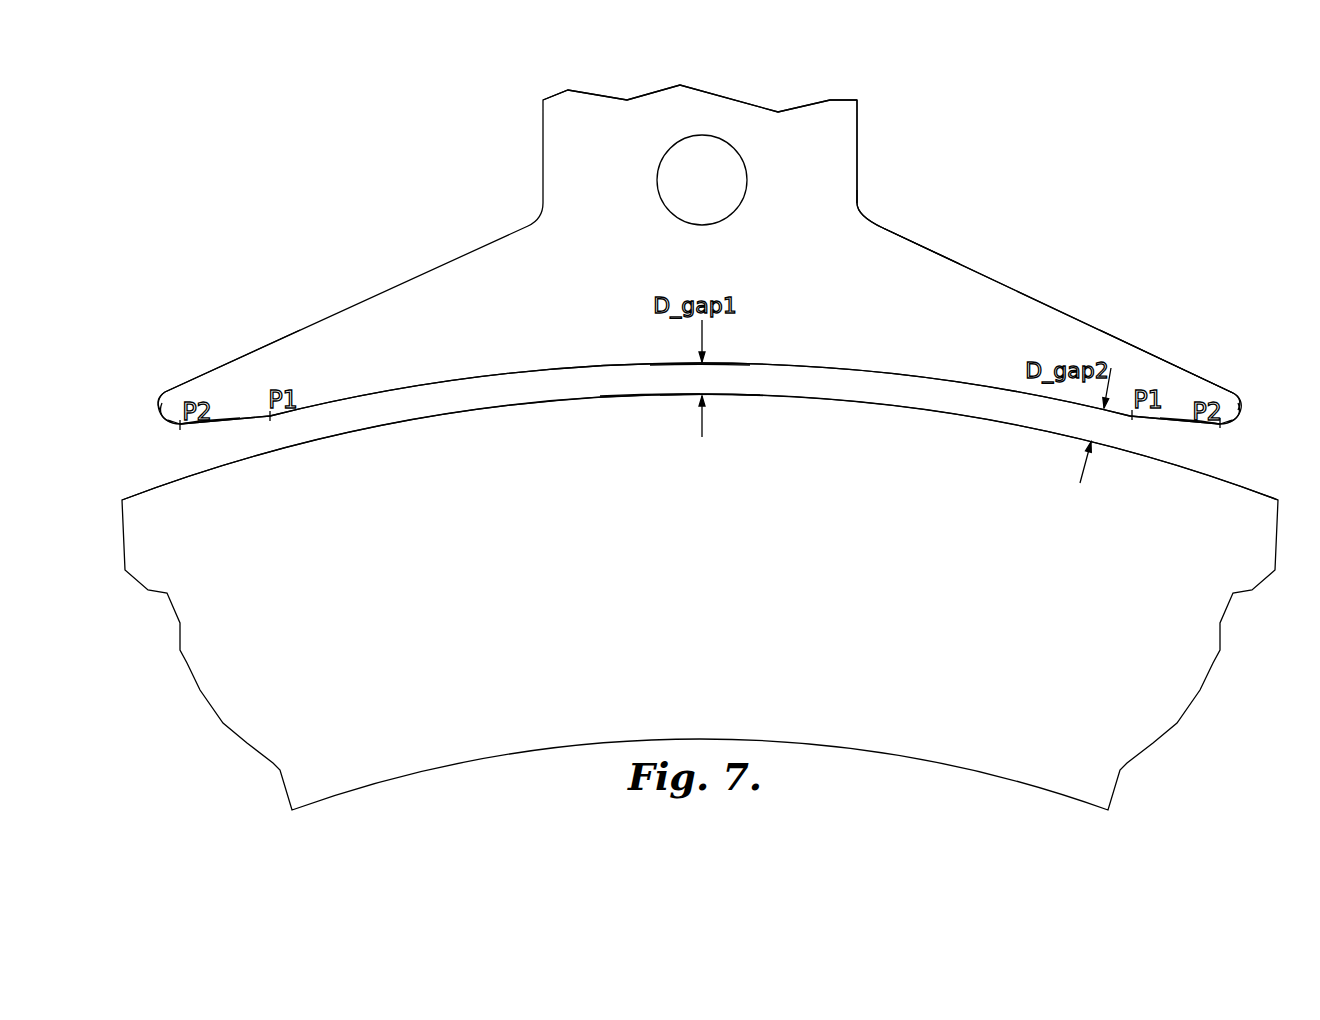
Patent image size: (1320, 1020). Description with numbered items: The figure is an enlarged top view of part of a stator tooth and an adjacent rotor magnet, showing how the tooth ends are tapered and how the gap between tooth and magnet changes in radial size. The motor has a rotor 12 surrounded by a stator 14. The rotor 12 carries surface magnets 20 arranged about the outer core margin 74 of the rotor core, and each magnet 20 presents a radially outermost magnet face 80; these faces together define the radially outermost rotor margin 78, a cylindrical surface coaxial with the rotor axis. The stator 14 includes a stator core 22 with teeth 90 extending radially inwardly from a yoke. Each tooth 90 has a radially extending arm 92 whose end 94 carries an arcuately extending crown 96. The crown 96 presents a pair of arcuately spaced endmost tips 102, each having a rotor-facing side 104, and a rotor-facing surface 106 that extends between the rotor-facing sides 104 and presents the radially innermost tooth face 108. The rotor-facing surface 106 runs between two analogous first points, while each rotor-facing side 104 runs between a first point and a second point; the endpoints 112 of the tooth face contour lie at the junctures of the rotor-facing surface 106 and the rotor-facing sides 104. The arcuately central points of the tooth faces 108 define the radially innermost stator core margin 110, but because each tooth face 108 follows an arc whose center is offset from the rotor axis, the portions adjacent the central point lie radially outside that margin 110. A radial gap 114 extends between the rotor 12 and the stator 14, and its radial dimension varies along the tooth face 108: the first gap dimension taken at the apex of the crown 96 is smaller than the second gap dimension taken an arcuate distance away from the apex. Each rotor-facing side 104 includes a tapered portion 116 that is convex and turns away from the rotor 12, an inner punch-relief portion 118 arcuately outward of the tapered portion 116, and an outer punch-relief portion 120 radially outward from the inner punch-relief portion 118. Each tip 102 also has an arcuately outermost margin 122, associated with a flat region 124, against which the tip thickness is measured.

The rotor 12 is at (827, 757).
The stator 14 is at (767, 93).
The magnets 20 is at (590, 680).
The stator core 22 is at (817, 147).
The outer core margin 74 is at (1258, 500).
The radially outermost rotor margin 78 is at (500, 407).
The radially outermost magnet face 80 is at (540, 370).
The tooth 90 is at (810, 220).
The arm 92 is at (740, 127).
The end 94 is at (843, 232).
The crown 96 is at (893, 308).
The endmost tips 102 is at (243, 373).
The rotor-facing side 104 is at (210, 427).
The rotor-facing surface 106 is at (680, 363).
The radially innermost tooth face 108 is at (650, 365).
The radially innermost stator core margin 110 is at (703, 362).
The endpoints 112 is at (273, 420).
The radial gap 114 is at (860, 387).
The tapered portion 116 is at (220, 427).
The inner punch-relief portion 118 is at (173, 427).
The outer punch-relief portion 120 is at (164, 388).
The arcuately outermost margin 122 is at (163, 397).
The flat region 124 is at (163, 412).